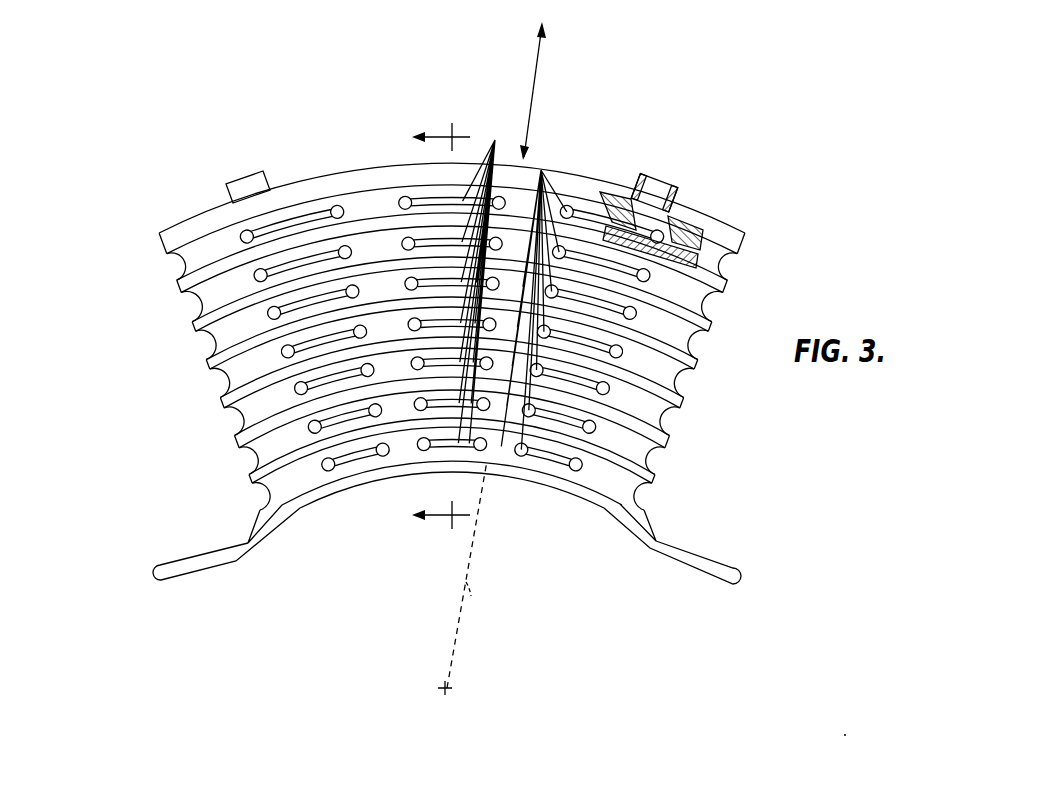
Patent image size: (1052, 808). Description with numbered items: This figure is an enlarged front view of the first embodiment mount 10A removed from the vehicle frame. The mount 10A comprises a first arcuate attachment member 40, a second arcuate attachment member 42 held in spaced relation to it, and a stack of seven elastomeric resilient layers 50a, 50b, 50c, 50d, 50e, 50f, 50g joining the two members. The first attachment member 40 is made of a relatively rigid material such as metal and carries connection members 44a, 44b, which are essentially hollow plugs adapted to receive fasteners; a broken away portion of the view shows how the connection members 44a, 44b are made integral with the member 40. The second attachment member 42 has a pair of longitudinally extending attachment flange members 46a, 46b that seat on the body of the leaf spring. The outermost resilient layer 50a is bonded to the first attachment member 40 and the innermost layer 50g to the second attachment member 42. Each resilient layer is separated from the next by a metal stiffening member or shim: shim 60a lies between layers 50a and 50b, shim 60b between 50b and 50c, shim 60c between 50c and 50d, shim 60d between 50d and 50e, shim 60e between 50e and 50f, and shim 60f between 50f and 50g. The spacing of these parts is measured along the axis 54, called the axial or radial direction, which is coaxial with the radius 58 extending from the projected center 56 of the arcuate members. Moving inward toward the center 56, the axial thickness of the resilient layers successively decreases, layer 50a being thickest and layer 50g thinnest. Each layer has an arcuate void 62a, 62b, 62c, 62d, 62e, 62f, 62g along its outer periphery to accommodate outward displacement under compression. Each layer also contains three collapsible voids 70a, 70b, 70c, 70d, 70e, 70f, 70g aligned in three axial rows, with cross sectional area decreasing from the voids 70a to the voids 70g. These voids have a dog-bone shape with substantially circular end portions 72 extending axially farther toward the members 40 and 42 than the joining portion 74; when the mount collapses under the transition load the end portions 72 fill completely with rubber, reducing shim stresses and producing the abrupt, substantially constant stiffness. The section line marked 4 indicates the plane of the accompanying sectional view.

The first embodiment mount 10A is at (590, 142).
The first arcuate attachment member 40 is at (347, 183).
The second arcuate attachment member 42 is at (517, 478).
The connection member 44a is at (243, 174).
The connection member 44b is at (678, 191).
The attachment flange member 46a is at (204, 568).
The attachment flange member 46b is at (710, 580).
The resilient layer 50a is at (166, 254).
The resilient layer 50b is at (181, 292).
The resilient layer 50c is at (196, 331).
The resilient layer 50d is at (210, 369).
The resilient layer 50e is at (224, 408).
The resilient layer 50f is at (239, 448).
The resilient layer 50g is at (285, 492).
The axis 54 is at (531, 98).
The projected center 56 is at (452, 692).
The radius 58 is at (468, 592).
The stiffening member 60a is at (738, 258).
The stiffening member 60b is at (716, 288).
The stiffening member 60c is at (700, 323).
The stiffening member 60d is at (686, 360).
The stiffening member 60e is at (673, 399).
The stiffening member 60f is at (654, 480).
The arcuate void 62a is at (174, 270).
The arcuate void 62b is at (189, 309).
The arcuate void 62c is at (203, 347).
The arcuate void 62d is at (217, 386).
The arcuate void 62e is at (231, 423).
The arcuate void 62f is at (246, 462).
The arcuate void 62g is at (658, 541).
The collapsible void 70a is at (403, 197).
The collapsible void 70b is at (328, 256).
The collapsible void 70c is at (335, 296).
The collapsible void 70d is at (342, 335).
The collapsible void 70e is at (350, 372).
The collapsible void 70f is at (357, 411).
The collapsible void 70g is at (420, 447).
The end portion 72 is at (372, 165).
The joining portion 74 is at (484, 278).
The section line 4- 4 is at (432, 326).